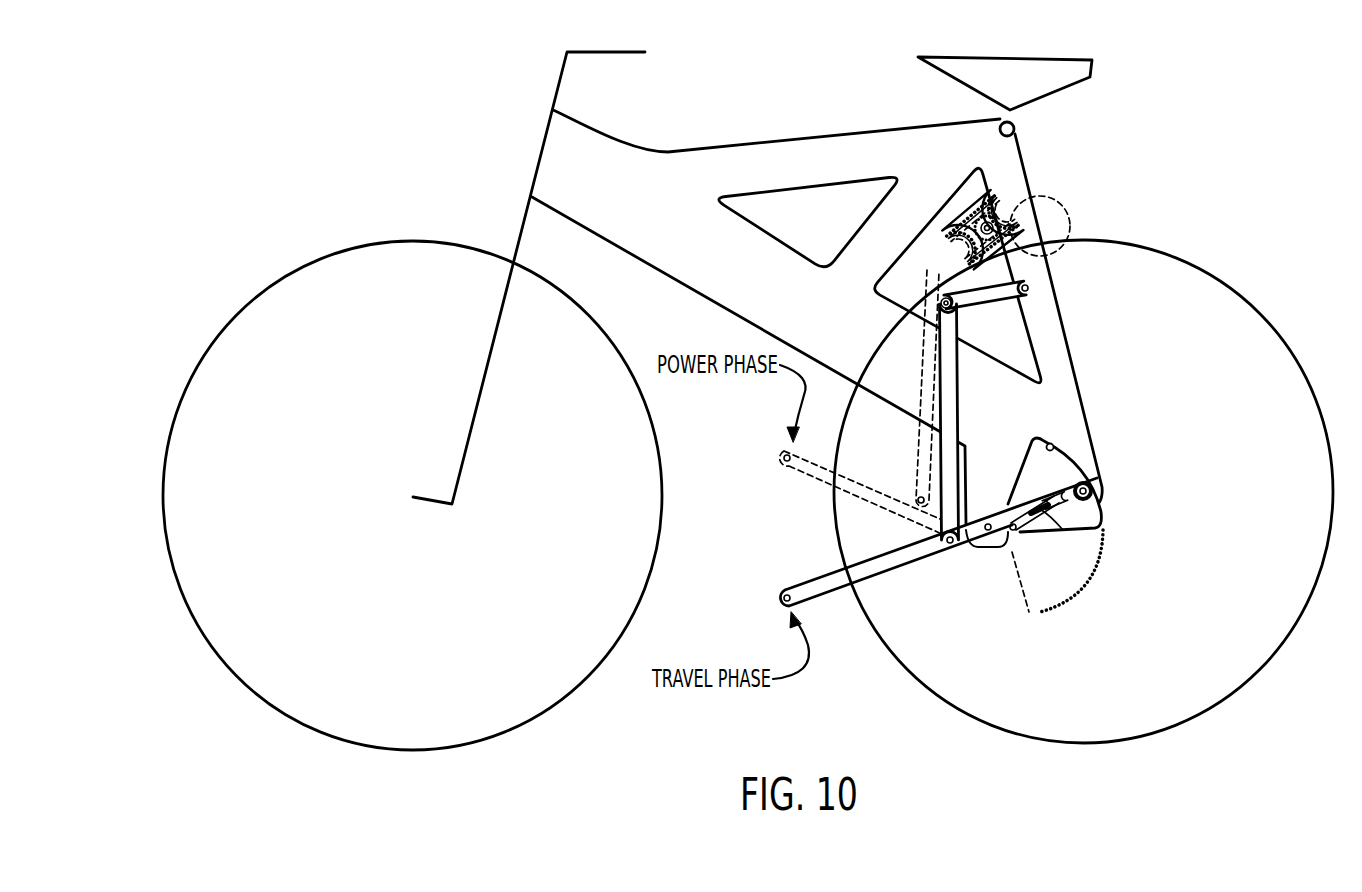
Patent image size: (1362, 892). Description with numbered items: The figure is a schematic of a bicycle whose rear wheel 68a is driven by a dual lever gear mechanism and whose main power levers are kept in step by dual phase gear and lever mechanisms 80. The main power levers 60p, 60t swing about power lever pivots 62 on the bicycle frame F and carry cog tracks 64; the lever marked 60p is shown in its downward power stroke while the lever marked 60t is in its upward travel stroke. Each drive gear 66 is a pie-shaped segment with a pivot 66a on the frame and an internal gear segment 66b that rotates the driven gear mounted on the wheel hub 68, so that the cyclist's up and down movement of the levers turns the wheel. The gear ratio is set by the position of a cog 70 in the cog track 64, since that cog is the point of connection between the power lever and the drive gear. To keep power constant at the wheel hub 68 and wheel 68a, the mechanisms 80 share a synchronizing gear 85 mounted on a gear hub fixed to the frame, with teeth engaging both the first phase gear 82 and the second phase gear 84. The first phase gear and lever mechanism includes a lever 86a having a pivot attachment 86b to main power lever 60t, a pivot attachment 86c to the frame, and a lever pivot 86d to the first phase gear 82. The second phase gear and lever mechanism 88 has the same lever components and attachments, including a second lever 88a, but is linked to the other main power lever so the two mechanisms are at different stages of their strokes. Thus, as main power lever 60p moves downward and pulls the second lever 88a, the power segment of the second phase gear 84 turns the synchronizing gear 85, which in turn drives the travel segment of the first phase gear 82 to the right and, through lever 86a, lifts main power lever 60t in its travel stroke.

The bicycle frame F is at (765, 140).
The dual phase gear and lever mechanisms 80 is at (1045, 157).
The first phase gear 82 is at (1025, 196).
The second phase gear 84 is at (1085, 210).
The synchronizing gear 85 is at (979, 224).
The second phase gear and lever mechanism 88 is at (927, 272).
The second lever 88a is at (912, 452).
The lever 86a is at (960, 405).
The pivot attachment 86b is at (946, 552).
The pivot attachment 86c is at (1033, 290).
The lever pivot 86d is at (952, 306).
The main power lever 60p is at (782, 460).
The main power lever 60t is at (783, 600).
The power lever pivot 62 is at (978, 545).
The cog track 64 is at (1052, 512).
The drive gear 66 is at (1103, 517).
The pivot 66a is at (1032, 545).
The internal gear segment 66b is at (1050, 444).
The wheel hub 68 is at (1095, 489).
The wheel 68a is at (1280, 332).
The cog 70 is at (1050, 522).